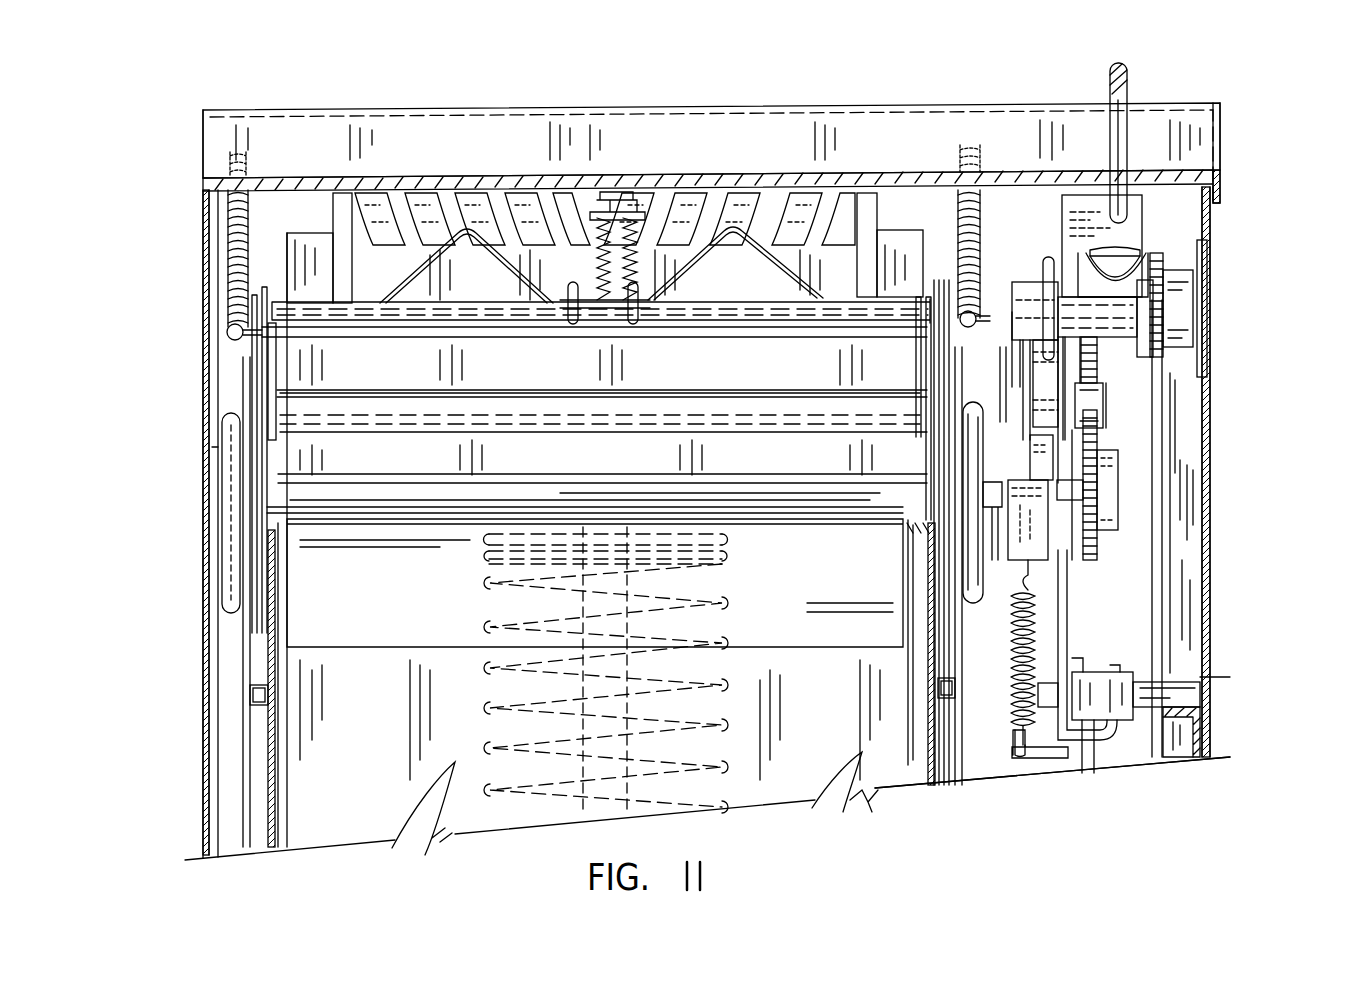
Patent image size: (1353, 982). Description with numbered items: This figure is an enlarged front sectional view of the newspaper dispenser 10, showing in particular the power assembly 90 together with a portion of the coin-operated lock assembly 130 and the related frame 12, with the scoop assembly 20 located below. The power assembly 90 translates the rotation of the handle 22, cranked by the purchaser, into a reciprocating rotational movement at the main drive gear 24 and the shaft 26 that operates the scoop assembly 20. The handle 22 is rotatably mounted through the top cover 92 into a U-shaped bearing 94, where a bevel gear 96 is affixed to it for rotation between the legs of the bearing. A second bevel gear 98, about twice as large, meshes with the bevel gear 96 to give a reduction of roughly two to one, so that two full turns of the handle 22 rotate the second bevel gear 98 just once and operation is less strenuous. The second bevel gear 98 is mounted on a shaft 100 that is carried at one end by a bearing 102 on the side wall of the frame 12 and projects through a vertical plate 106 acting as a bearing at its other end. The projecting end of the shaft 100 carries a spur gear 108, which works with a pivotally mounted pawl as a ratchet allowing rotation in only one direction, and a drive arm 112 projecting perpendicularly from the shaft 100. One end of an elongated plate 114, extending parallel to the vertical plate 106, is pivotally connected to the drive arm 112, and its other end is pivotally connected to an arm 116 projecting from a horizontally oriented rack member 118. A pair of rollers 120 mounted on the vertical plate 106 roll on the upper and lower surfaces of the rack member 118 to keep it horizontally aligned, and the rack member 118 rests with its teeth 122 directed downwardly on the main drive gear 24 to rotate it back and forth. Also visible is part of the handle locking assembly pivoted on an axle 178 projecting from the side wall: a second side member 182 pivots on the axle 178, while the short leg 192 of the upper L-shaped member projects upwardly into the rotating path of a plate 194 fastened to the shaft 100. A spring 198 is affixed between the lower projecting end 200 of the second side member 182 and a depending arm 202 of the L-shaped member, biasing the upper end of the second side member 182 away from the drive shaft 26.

The newspaper dispenser 10 is at (1307, 163).
The frame 12 is at (1212, 466).
The scoop assembly 20 is at (456, 169).
The handle 22 is at (1124, 98).
The main drive gear 24 is at (1100, 545).
The shaft 26 is at (1073, 563).
The power assembly 90 is at (1200, 310).
The top cover 92 is at (1222, 141).
The U-shaped bearing 94 is at (1068, 218).
The bevel gear 96 is at (1130, 272).
The second bevel gear 98 is at (1156, 367).
The shaft 100 is at (1172, 303).
The bearing 102 is at (1208, 330).
The vertical plate 106 is at (1062, 445).
The spur gear 108 is at (1043, 272).
The drive arm 112 is at (1012, 308).
The elongated plate 114 is at (1005, 392).
The arm 116 is at (1015, 420).
The rack member 118 is at (1105, 393).
The rollers 120 is at (1088, 355).
The teeth 122 is at (1097, 413).
The coin-operated lock assembly 130 is at (1170, 608).
The axle 178 is at (1208, 685).
The second side member 182 is at (1067, 645).
The short leg 192 is at (1035, 465).
The plate 194 is at (1027, 410).
The spring 198 is at (1040, 640).
The lower projecting end 200 is at (1052, 791).
The depending arm 202 is at (958, 545).